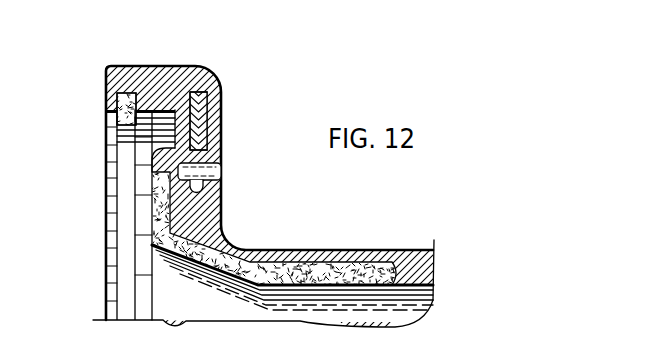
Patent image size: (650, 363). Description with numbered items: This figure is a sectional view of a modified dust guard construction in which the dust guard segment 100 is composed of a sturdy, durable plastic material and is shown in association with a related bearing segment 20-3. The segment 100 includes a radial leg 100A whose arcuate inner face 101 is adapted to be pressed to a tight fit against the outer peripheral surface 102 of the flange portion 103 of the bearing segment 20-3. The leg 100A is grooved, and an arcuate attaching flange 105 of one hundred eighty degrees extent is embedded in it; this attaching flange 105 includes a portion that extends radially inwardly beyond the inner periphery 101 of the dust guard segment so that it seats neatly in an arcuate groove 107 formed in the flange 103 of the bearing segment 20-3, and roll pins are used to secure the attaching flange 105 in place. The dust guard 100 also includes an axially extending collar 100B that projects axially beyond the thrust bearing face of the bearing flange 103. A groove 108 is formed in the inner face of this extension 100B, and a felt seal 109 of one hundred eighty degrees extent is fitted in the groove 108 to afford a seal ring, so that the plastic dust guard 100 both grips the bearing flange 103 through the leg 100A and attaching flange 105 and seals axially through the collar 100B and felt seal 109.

The dust guard segment 100 is at (203, 64).
The radial leg 100A is at (222, 135).
The axially extending collar 100B is at (139, 66).
The arcuate inner face 101 is at (220, 164).
The outer peripheral surface 102 is at (135, 143).
The flange portion 103 is at (220, 200).
The attaching flange 105 is at (220, 110).
The arcuate groove 107 is at (220, 196).
The groove 108 is at (117, 99).
The felt seal 109 is at (117, 117).
The bearing segment 20-3 is at (320, 249).